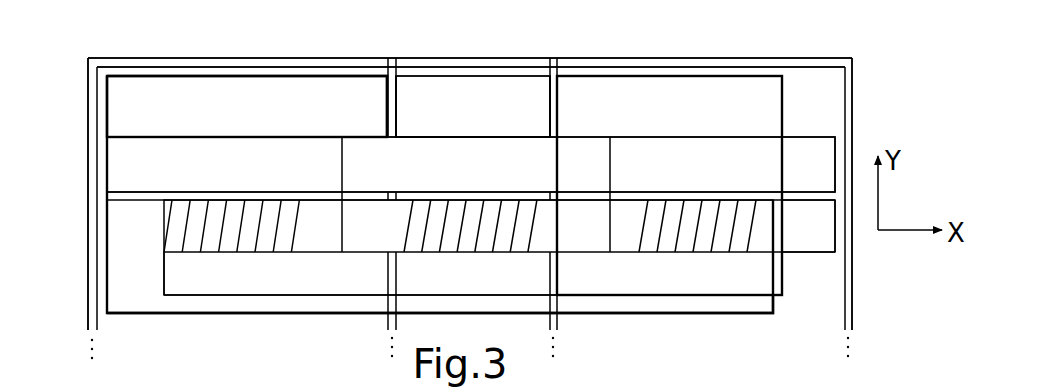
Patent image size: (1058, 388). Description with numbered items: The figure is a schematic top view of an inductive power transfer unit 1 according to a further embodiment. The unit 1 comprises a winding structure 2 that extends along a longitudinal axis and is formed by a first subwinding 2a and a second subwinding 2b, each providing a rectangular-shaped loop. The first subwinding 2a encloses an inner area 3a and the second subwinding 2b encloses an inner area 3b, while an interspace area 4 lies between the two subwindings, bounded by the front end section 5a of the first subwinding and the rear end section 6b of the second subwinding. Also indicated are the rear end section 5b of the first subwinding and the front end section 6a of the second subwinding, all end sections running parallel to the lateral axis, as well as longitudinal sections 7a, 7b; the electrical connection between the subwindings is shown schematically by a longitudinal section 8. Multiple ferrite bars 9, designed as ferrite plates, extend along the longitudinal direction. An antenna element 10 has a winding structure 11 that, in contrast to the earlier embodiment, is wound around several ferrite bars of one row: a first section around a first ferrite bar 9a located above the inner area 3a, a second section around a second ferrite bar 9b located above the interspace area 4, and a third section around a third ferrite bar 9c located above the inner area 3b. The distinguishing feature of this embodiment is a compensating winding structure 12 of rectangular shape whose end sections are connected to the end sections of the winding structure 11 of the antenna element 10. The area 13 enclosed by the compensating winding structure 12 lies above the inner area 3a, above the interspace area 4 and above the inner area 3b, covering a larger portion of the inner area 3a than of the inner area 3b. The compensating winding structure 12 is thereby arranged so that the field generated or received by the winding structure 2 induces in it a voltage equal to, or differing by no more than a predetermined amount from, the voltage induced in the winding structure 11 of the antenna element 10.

The inductive power transfer unit 1 is at (80, 316).
The winding structure 2 is at (88, 243).
The first subwinding 2a is at (193, 58).
The second subwinding 2b is at (702, 58).
The inner area 3a is at (217, 125).
The inner area 3b is at (653, 125).
The interspace area 4 is at (488, 123).
The front end section 5a is at (398, 127).
The rear end section 5b is at (88, 152).
The front end section 6a is at (852, 135).
The rear end section 6b is at (548, 128).
The longitudinal section 7a is at (263, 58).
The longitudinal section 7b is at (627, 58).
The longitudinal section 8 is at (473, 58).
The ferrite bars 9 is at (295, 150).
The first ferrite bar 9a is at (315, 242).
The second ferrite bar 9b is at (575, 243).
The third ferrite bar 9c is at (803, 243).
The antenna element 10 is at (697, 263).
The winding structure 11 is at (633, 252).
The compensating winding structure 12 is at (677, 315).
The area 13 is at (760, 122).